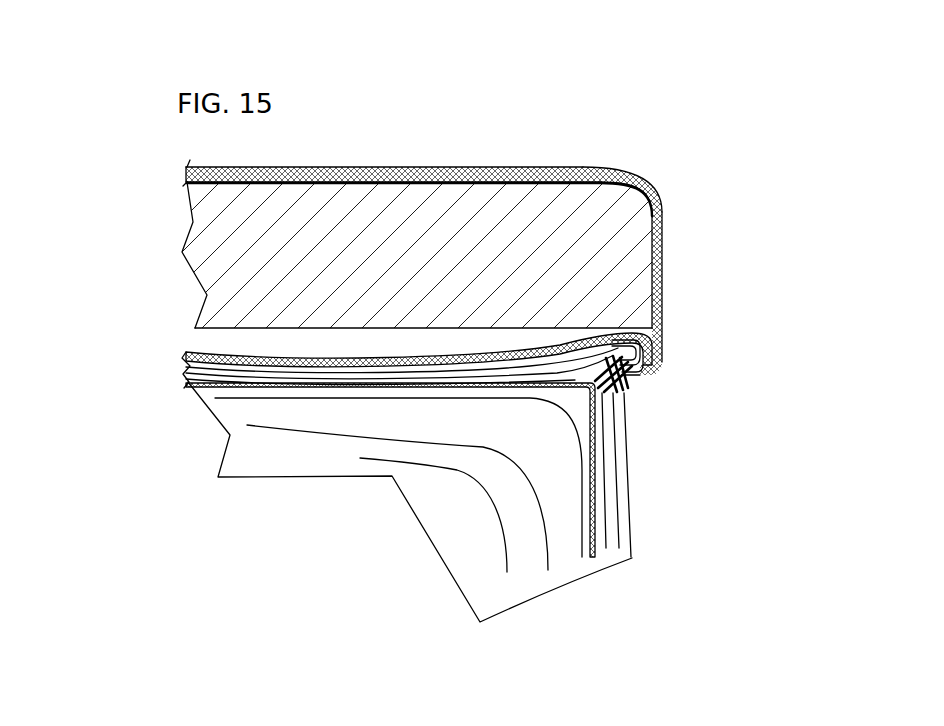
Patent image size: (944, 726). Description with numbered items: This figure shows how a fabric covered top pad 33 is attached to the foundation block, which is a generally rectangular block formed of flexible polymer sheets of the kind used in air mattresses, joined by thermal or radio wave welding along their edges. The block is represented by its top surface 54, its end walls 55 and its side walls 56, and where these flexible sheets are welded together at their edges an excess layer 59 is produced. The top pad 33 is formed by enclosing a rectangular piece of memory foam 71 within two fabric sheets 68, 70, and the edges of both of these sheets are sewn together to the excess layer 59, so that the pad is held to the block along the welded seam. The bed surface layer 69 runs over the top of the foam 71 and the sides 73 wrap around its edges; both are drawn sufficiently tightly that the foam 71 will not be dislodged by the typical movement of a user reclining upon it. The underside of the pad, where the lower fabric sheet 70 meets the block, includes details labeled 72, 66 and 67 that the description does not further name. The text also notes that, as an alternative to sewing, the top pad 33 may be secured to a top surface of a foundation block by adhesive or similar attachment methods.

The top pad 33 is at (517, 196).
The bed surface layer 69 is at (354, 166).
The fabric sheet 68 is at (624, 165).
The sides 73 is at (672, 257).
The memory foam 71 is at (235, 254).
The cushion bottom surface 72 is at (201, 332).
The fabric sheet 70 is at (382, 353).
The cover fold 66 is at (671, 344).
The inner liner fold 67 is at (643, 376).
The excess layer 59 is at (609, 389).
The top surface 54 is at (293, 390).
The end walls 55 is at (403, 483).
The side walls 56 is at (582, 510).